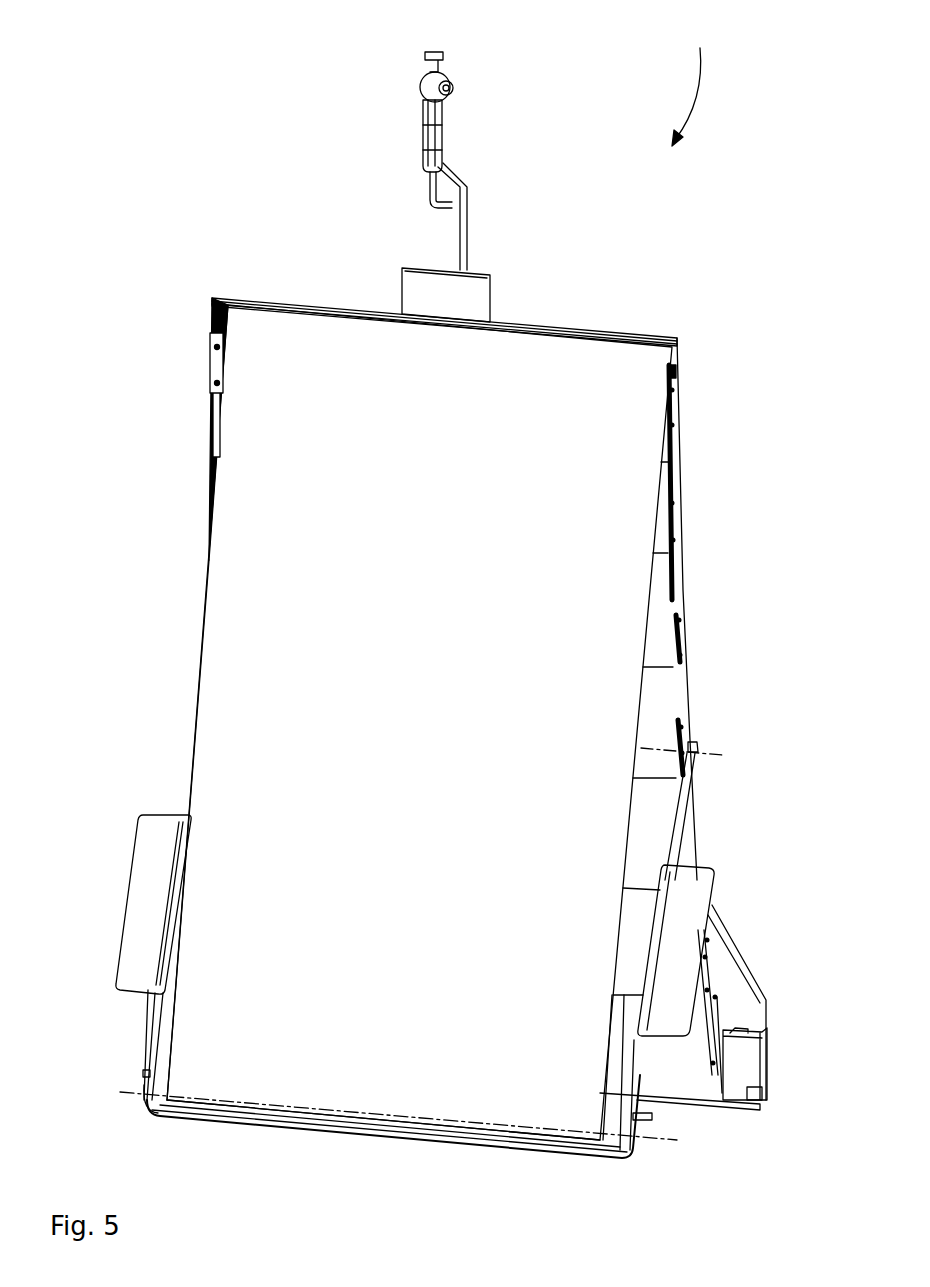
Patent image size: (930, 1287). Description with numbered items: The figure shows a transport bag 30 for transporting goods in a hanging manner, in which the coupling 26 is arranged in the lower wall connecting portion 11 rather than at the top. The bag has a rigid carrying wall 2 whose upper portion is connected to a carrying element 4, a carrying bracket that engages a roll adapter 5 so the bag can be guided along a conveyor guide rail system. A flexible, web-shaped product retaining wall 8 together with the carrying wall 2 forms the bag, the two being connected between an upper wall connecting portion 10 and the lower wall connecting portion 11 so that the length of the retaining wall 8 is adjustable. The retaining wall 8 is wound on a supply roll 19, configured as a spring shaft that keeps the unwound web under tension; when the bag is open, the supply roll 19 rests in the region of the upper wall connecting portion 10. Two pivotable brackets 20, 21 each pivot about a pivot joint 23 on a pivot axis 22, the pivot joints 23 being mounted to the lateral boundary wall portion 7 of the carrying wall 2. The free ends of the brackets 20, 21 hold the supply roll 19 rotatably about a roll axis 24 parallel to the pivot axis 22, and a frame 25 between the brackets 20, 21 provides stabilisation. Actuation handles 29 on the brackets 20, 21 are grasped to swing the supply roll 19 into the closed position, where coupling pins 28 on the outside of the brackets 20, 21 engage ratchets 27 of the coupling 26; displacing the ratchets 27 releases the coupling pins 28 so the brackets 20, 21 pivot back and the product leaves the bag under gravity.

The carrying wall 2 is at (655, 547).
The carrying element 4 is at (462, 203).
The roll adapter 5 is at (440, 128).
The boundary wall portion 7 is at (680, 633).
The product retaining wall 8 is at (280, 690).
The upper wall connecting portion 10 is at (581, 332).
The lower wall connecting portion 11 is at (767, 1116).
The supply roll 19 is at (408, 1131).
The pivotable bracket 20 is at (160, 1027).
The pivotable bracket 21 is at (683, 808).
The pivot axis 22 is at (718, 756).
The pivot joint 23 is at (698, 750).
The roll axis 24 is at (145, 1090).
The frame 25 is at (298, 1129).
The coupling 26 is at (770, 1054).
The ratchet 27 is at (765, 1096).
The coupling pin 28 is at (143, 1073).
The actuation handle 29 is at (130, 910).
The transport bag 30 is at (694, 80).